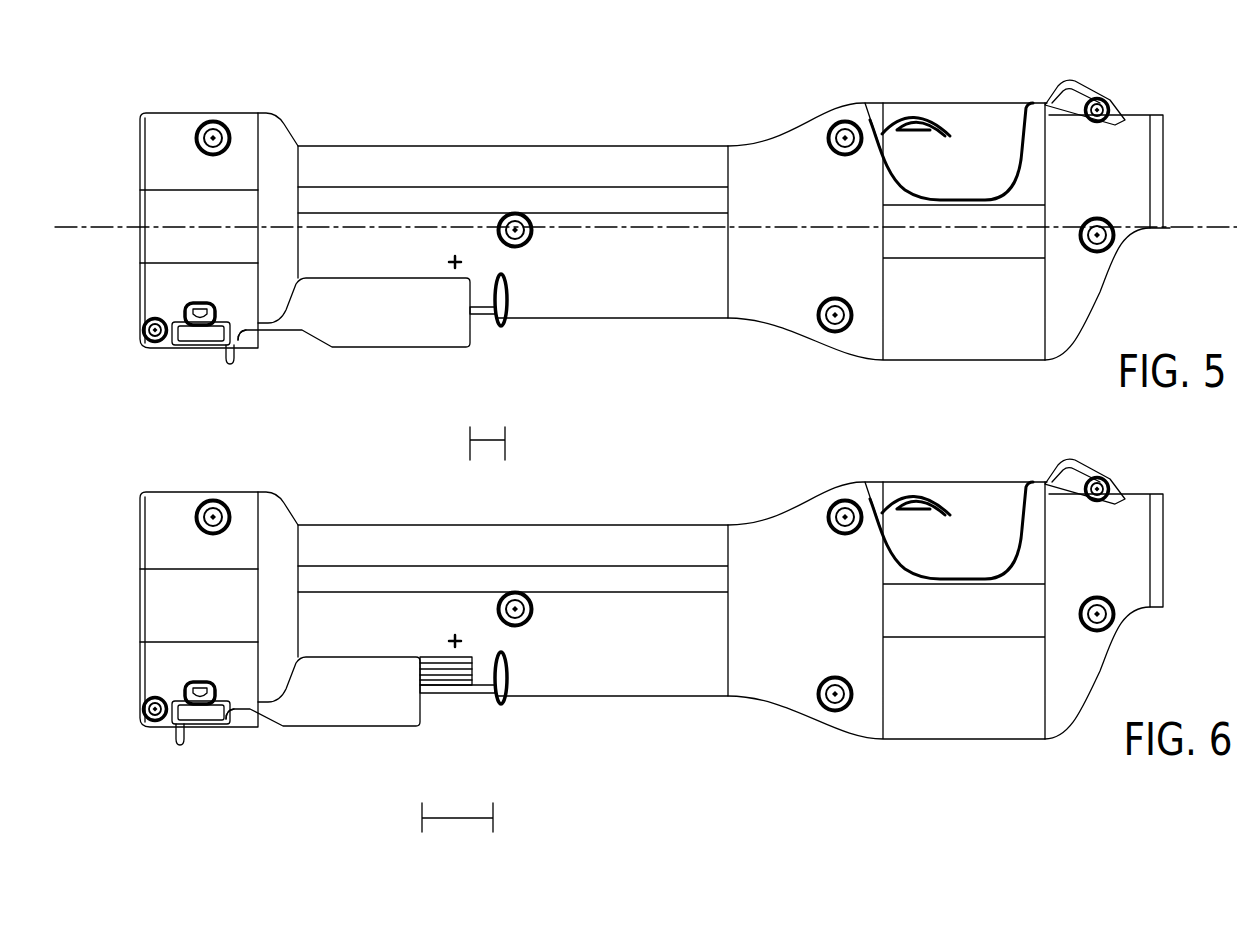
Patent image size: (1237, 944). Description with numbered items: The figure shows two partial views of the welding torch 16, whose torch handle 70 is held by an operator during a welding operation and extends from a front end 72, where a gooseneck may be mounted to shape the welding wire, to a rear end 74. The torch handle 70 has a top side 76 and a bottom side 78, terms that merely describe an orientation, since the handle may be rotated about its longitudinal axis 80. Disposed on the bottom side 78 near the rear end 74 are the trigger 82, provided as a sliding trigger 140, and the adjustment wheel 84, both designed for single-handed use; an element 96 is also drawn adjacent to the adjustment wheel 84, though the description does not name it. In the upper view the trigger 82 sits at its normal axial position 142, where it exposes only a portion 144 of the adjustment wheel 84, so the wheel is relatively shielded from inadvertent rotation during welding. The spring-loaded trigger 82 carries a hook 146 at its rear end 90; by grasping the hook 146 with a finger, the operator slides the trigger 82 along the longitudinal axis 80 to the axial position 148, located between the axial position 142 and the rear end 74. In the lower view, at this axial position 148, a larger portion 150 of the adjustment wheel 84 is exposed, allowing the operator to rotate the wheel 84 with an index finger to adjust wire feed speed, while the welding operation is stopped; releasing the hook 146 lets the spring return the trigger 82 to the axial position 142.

In FIG. 5, the welding torch 16 is at (646, 260).
In FIG. 6, the welding torch 16 is at (649, 634).
In FIG. 5, the torch handle 70 is at (532, 145).
In FIG. 6, the torch handle 70 is at (513, 588).
In FIG. 5, the front end 72 is at (1164, 125).
In FIG. 6, the front end 72 is at (1122, 469).
In FIG. 5, the rear end 74 is at (137, 137).
In FIG. 6, the rear end 74 is at (179, 585).
In FIG. 5, the top side 76 is at (428, 113).
In FIG. 5, the bottom side 78 is at (700, 353).
In FIG. 6, the bottom side 78 is at (931, 633).
In FIG. 5, the longitudinal axis 80 is at (95, 226).
In FIG. 5, the trigger 82 is at (354, 353).
In FIG. 6, the trigger 82 is at (323, 727).
In FIG. 5, the adjustment wheel 84 is at (485, 320).
In FIG. 6, the adjustment wheel 84 is at (457, 719).
In FIG. 5, the rear end of the trigger 90 is at (247, 330).
In FIG. 6, the rear end of the trigger 90 is at (212, 758).
In FIG. 5, the ring 96 is at (503, 324).
In FIG. 6, the ring 96 is at (529, 708).
In FIG. 5, the sliding trigger 140 is at (377, 348).
In FIG. 6, the sliding trigger 140 is at (323, 727).
In FIG. 5, the axial position 142 is at (428, 363).
In FIG. 6, the axial position 142 is at (415, 767).
In FIG. 5, the portion of the adjustment wheel 144 is at (488, 442).
In FIG. 5, the hook 146 is at (231, 366).
In FIG. 6, the hook 146 is at (178, 735).
In FIG. 6, the axial position 148 is at (411, 736).
In FIG. 6, the larger portion of the adjustment wheel 150 is at (473, 835).